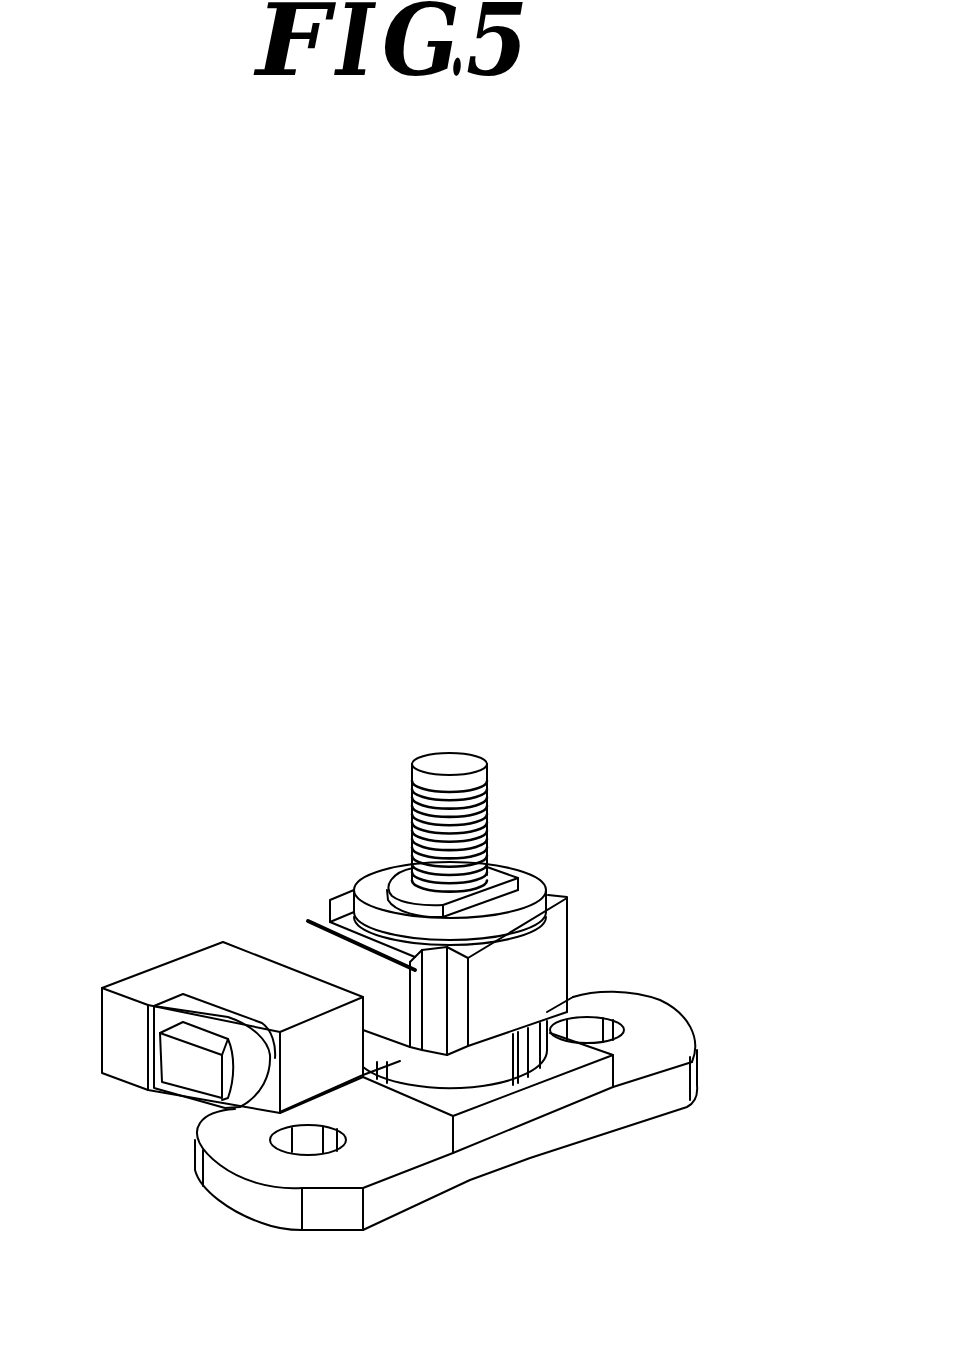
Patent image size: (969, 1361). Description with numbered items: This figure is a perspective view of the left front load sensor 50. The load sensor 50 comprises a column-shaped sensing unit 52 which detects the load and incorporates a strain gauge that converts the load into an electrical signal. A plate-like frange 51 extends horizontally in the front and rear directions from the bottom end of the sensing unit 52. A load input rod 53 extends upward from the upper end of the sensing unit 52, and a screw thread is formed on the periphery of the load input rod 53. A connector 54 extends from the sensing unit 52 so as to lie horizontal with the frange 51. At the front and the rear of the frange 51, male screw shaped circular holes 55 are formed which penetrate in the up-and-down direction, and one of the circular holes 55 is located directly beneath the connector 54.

The left front load sensor 50 is at (564, 638).
The frange 51 is at (548, 1140).
The sensing unit 52 is at (550, 950).
The load input rod 53 is at (487, 791).
The connector 54 is at (203, 970).
The circular holes 55 is at (610, 1017).